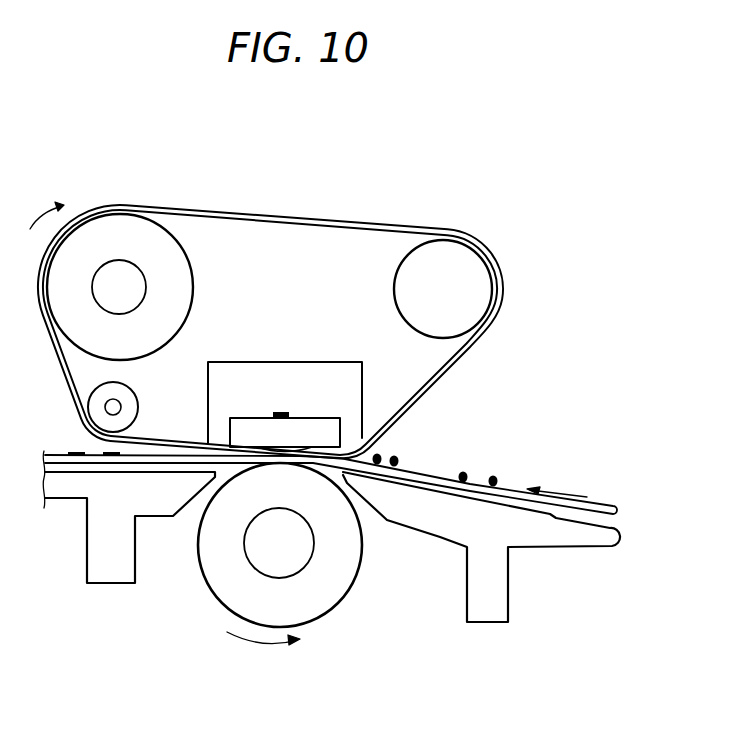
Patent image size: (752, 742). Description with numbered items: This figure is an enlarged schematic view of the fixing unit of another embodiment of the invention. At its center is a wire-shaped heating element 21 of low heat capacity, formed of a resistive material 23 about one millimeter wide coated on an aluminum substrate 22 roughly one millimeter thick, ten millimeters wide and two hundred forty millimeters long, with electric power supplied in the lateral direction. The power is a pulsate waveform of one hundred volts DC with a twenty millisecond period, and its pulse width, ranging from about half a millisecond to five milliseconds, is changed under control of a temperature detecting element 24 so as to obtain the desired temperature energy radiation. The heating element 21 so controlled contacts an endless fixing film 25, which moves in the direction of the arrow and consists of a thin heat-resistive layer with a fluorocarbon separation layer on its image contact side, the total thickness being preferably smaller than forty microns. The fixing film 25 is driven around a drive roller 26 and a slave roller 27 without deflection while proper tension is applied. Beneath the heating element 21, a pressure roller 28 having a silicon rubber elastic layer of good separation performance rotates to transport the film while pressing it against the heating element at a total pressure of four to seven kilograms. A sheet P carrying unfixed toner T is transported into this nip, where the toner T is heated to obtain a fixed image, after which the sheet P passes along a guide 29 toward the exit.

The heating element 21 is at (362, 373).
The aluminum substrate 22 is at (340, 413).
The resistive material 23 is at (287, 451).
The temperature detecting element 24 is at (286, 412).
The fixing film 25 is at (270, 208).
The drive roller 26 is at (98, 212).
The slave roller 27 is at (478, 263).
The pressure roller 28 is at (347, 582).
The exit guide plate 29 is at (597, 543).
The unfixed toner T is at (498, 483).
The sheet P is at (605, 503).